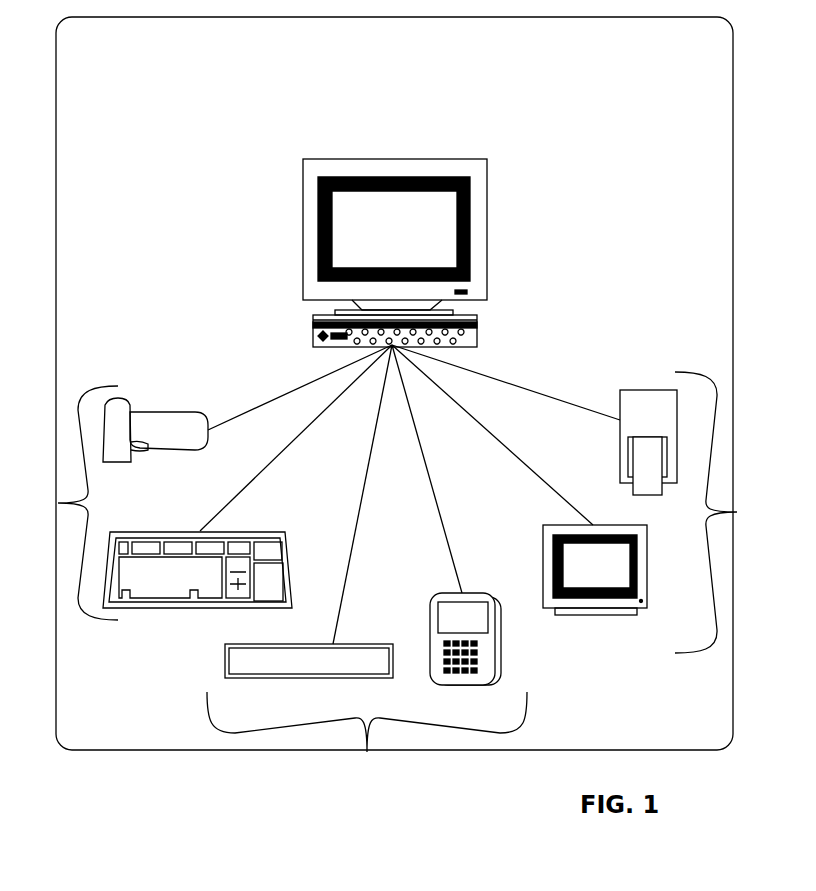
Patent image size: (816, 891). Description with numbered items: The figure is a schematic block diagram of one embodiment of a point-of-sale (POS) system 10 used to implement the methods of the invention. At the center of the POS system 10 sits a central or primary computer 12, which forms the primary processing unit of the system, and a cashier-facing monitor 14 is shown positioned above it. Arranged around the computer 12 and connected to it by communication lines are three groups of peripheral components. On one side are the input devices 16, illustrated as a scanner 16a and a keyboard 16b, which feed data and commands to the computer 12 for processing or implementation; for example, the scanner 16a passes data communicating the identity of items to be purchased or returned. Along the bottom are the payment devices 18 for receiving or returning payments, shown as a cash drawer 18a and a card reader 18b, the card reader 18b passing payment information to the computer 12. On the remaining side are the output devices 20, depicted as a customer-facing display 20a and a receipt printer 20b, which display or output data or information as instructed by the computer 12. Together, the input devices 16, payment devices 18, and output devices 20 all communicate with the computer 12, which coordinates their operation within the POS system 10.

The POS system 10 is at (394, 383).
The computer 12 is at (498, 311).
The monitor 14 is at (286, 197).
The input devices 16 is at (58, 503).
The scanner 16a is at (179, 408).
The keyboard 16b is at (263, 540).
The payment devices 18 is at (367, 752).
The cash drawer 18a is at (310, 663).
The card reader 18b is at (450, 594).
The output devices 20 is at (737, 512).
The customer-facing display 20a is at (596, 580).
The receipt printer 20b is at (638, 410).